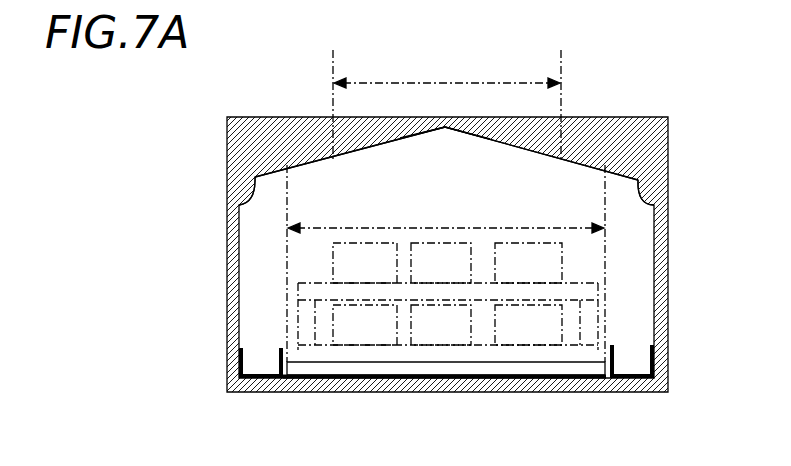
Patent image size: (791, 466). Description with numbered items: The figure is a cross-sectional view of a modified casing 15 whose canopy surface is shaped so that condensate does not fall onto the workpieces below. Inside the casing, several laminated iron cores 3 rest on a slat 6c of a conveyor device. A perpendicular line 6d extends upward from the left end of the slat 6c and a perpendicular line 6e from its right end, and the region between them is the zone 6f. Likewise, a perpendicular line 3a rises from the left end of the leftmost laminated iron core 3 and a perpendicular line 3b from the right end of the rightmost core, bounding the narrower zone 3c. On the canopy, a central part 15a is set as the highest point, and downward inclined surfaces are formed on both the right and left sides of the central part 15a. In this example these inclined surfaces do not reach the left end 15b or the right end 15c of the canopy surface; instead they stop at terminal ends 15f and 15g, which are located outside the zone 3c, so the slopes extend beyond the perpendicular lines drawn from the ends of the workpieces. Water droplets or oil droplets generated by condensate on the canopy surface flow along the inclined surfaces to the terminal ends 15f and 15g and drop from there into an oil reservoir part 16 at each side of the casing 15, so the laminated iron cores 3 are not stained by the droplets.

The laminated iron core 3 is at (360, 258).
The perpendicular line extending from a left end of the laminated iron core 3a is at (332, 99).
The perpendicular line extending from a right end of the laminated iron core 3b is at (562, 100).
The zone 3c is at (447, 68).
The slat 6c is at (572, 372).
The perpendicular line extending from a left end of the slat 6d is at (286, 252).
The perpendicular line extending from a right end of the slat 6e is at (607, 261).
The zone 6f is at (446, 212).
The casing 15 is at (233, 314).
The central part of the canopy surface 15a is at (446, 140).
The left end of the canopy surface 15b is at (254, 176).
The right end of the canopy surface 15c is at (665, 167).
The terminal end of the downward inclined surface 15f is at (246, 198).
The terminal end of the downward inclined surface 15g is at (650, 208).
The oil reservoir part 16 is at (247, 370).